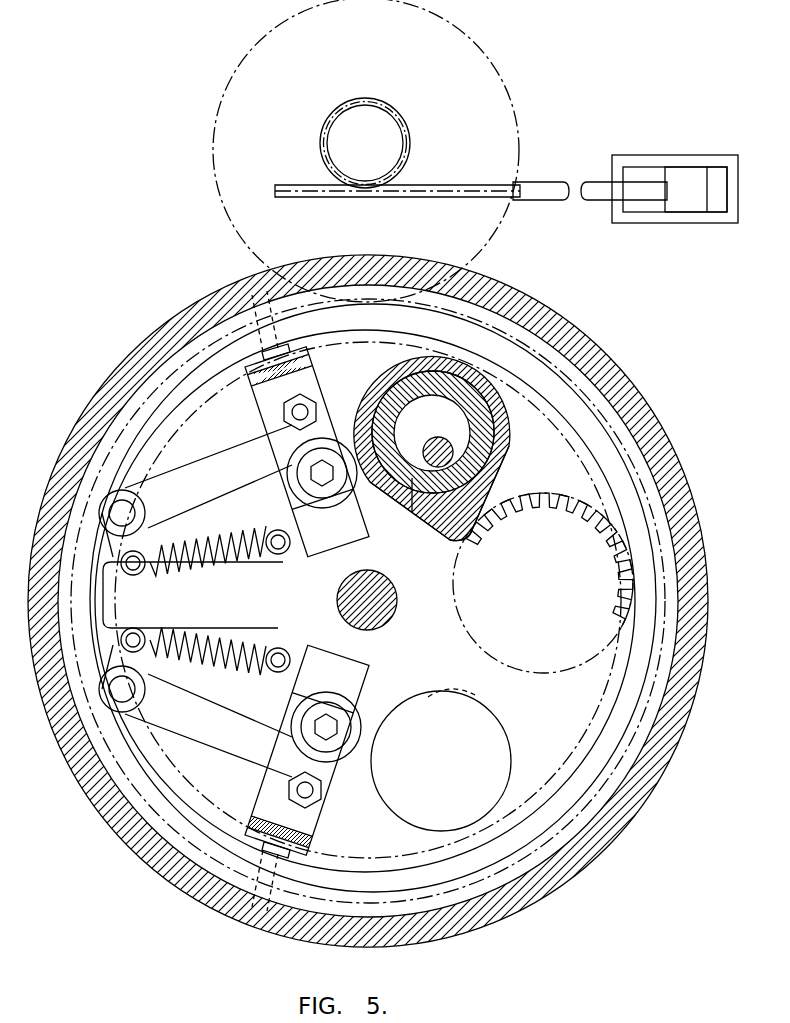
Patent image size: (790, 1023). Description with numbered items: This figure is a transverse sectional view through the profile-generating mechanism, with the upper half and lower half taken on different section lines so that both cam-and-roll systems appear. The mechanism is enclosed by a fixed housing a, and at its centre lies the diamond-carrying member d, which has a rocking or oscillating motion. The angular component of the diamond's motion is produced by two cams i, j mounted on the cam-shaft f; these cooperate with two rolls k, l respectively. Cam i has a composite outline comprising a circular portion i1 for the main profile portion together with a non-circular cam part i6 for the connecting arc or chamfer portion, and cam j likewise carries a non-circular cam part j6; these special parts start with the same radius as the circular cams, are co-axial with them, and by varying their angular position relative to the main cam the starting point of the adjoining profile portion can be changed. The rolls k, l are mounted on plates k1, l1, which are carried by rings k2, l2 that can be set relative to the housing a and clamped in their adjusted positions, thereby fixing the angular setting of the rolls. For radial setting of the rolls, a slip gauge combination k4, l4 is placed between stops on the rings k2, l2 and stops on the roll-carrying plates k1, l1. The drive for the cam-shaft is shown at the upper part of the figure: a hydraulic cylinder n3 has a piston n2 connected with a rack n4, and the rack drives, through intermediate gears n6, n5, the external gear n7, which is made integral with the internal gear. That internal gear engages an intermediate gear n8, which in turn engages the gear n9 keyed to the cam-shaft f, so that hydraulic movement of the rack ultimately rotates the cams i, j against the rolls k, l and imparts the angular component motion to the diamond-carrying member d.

The fixed housing a is at (150, 327).
The ring k2 is at (212, 365).
The ring l2 is at (512, 855).
The external gear n7 is at (558, 372).
The diamond-carrying member d is at (337, 598).
The roll k is at (290, 478).
The roll-carrying plate k1 is at (283, 385).
The slip gauge combination k4 is at (262, 372).
The roll l is at (308, 696).
The roll-carrying plate l1 is at (300, 818).
The slip gauge combination l4 is at (265, 833).
The cam i is at (410, 354).
The circular portion of cam i1 is at (415, 484).
The non-circular cam part i6 is at (426, 494).
The cam-shaft f is at (453, 448).
The intermediate gear n8 is at (598, 527).
The gear n9 is at (514, 486).
The cam j is at (506, 735).
The non-circular cam part j6 is at (445, 682).
The intermediate gear n6 is at (222, 90).
The intermediate gear n5 is at (367, 100).
The rack n4 is at (478, 183).
The hydraulic cylinder n3 is at (636, 160).
The piston n2 is at (687, 182).